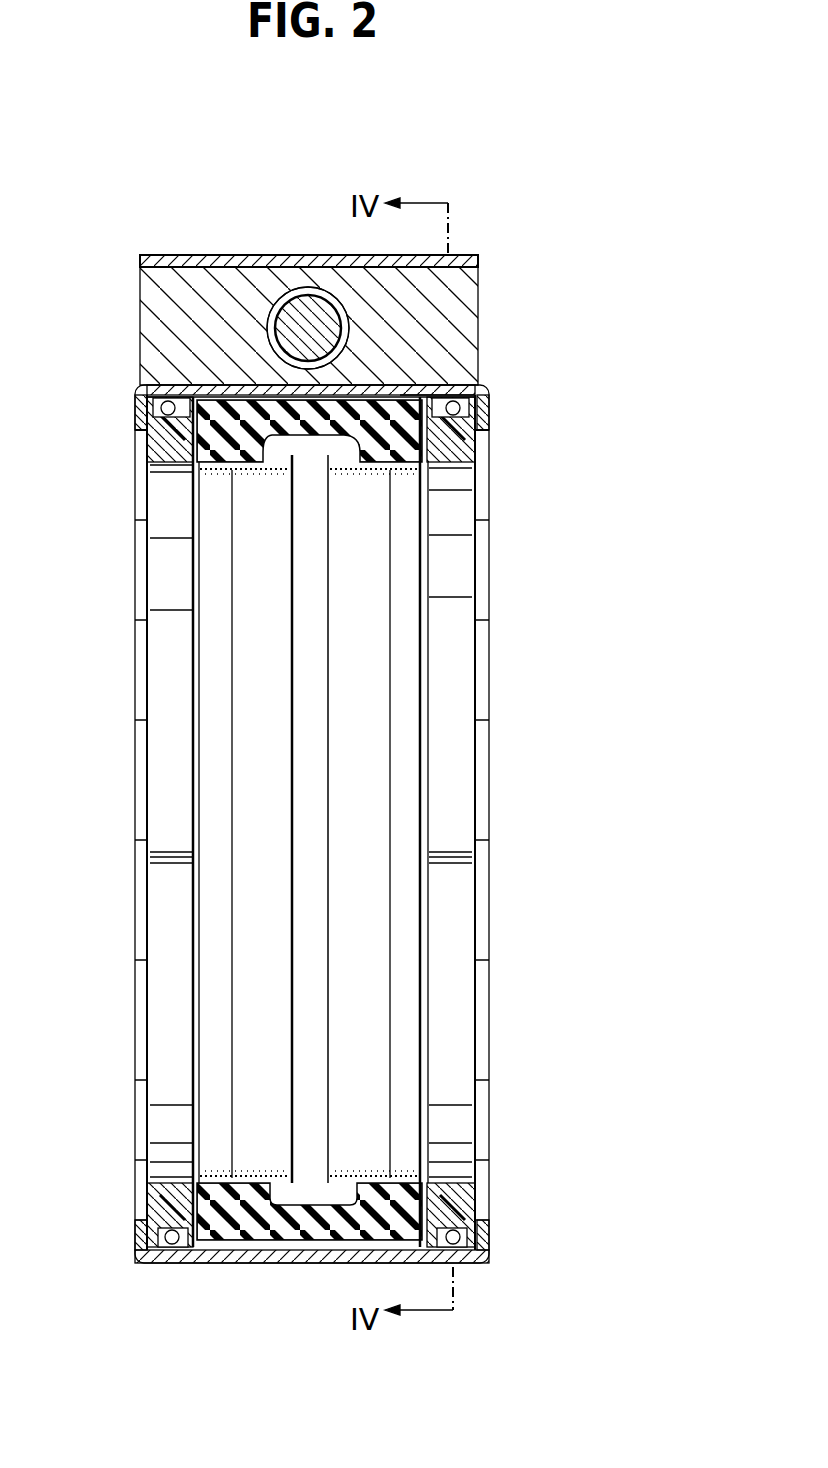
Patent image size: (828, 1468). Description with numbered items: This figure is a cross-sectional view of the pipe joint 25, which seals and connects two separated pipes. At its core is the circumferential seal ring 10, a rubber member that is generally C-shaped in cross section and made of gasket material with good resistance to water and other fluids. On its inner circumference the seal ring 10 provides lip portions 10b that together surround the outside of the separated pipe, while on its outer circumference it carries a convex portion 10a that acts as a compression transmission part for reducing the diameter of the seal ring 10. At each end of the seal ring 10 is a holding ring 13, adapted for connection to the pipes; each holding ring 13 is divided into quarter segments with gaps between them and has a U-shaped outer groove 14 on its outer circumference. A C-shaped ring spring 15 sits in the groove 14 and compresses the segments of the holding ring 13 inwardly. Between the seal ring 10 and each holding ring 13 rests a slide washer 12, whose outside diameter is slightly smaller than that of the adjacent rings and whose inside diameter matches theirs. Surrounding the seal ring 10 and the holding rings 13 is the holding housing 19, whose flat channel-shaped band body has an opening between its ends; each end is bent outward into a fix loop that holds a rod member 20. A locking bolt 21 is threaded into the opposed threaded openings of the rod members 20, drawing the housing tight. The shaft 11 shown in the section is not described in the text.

The seal ring 10 is at (248, 417).
The convex portion 10a is at (327, 417).
The lip portion 10b is at (277, 468).
The shaft 11 is at (305, 462).
The slide washer 12 is at (193, 467).
The holding ring 13 is at (150, 487).
The outer groove 14 is at (141, 420).
The ring spring 15 is at (160, 400).
The holding housing 19 is at (427, 395).
The rod member 20 is at (207, 283).
The locking bolt 21 is at (307, 307).
The pipe joint 25 is at (491, 252).